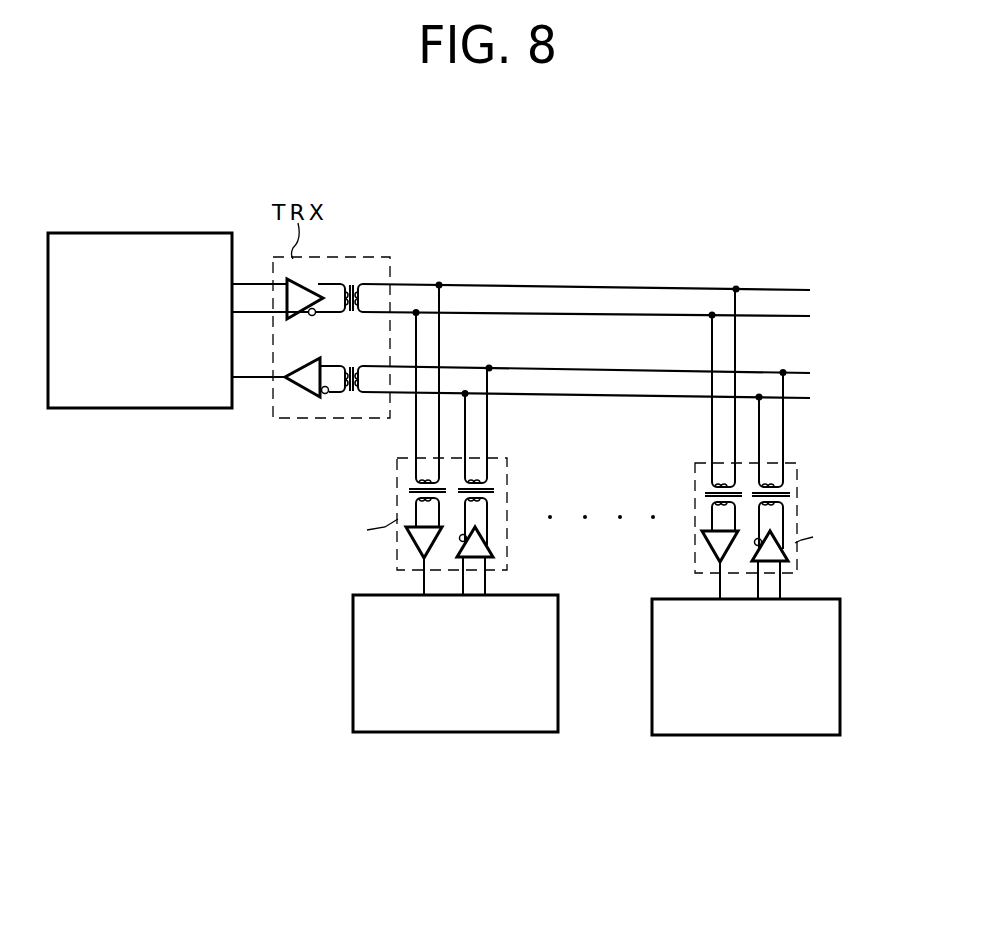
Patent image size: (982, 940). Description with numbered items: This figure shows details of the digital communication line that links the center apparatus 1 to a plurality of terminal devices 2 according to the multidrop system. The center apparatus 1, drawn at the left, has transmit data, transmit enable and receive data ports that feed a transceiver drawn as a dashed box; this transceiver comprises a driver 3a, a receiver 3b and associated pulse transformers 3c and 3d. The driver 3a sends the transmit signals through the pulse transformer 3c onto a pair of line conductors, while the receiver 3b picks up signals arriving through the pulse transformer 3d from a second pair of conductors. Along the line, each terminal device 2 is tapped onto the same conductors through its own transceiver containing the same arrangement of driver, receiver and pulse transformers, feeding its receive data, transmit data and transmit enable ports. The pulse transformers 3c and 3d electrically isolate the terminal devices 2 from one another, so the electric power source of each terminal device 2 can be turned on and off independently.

The center apparatus 1 is at (183, 232).
The terminal device 2 is at (506, 733).
The driver 3a is at (310, 285).
The receiver 3b is at (300, 392).
The pulse transformer 3c is at (355, 285).
The pulse transformer 3d is at (347, 398).